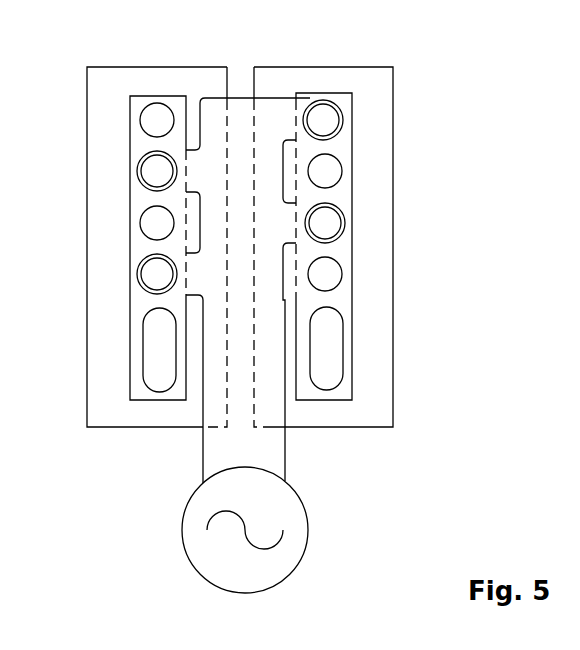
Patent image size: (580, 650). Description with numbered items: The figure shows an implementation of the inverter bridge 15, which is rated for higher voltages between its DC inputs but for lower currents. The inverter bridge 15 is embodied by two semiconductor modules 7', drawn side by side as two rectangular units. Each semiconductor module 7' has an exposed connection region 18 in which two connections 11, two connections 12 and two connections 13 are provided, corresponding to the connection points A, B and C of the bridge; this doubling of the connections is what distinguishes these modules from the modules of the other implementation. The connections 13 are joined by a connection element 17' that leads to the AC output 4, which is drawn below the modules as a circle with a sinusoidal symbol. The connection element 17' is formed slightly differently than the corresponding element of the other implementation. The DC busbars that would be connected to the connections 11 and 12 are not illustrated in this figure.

The AC output 4 is at (292, 570).
The semiconductor module 7' is at (248, 292).
The connection 11 is at (140, 120).
The connection 12 is at (137, 171).
The connection 13 is at (148, 375).
The inverter bridge 15 is at (370, 488).
The connection element 17' is at (218, 310).
The exposed connection region 18 is at (125, 87).